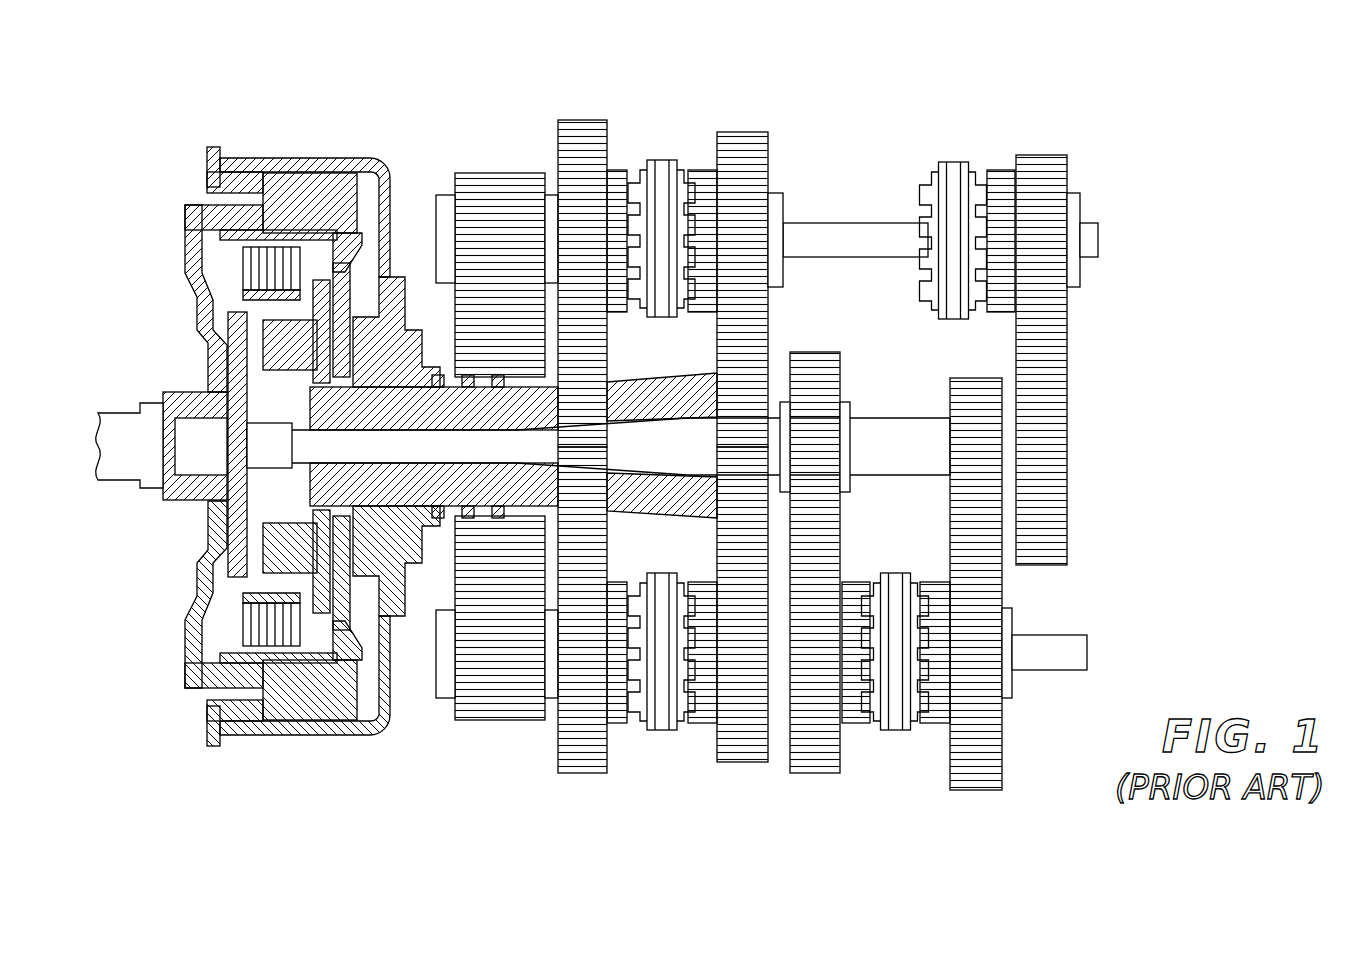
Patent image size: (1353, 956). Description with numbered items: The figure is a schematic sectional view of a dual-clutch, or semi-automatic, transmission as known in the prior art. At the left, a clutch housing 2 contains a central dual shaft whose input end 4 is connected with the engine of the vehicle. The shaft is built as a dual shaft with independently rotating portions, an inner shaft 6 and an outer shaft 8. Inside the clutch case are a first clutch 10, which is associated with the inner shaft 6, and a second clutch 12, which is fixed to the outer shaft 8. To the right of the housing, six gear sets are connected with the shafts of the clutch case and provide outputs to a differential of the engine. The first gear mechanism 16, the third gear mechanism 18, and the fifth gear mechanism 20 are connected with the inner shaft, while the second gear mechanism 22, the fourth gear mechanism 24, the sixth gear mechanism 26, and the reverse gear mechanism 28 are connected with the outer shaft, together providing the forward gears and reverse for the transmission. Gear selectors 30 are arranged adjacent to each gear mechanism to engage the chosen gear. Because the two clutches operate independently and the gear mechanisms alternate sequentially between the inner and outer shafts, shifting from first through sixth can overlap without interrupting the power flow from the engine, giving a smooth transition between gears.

The clutch housing 2 is at (343, 160).
The input end 4 is at (125, 413).
The inner shaft 6 is at (190, 462).
The outer shaft 8 is at (432, 480).
The first clutch 10 is at (265, 180).
The second clutch 12 is at (285, 262).
The first gear mechanism 16 is at (983, 760).
The third gear mechanism 18 is at (800, 773).
The fifth gear mechanism 20 is at (1043, 155).
The second gear mechanism 22 is at (591, 773).
The fourth gear mechanism 24 is at (740, 762).
The sixth gear mechanism 26 is at (750, 132).
The reverse gear mechanism 28 is at (583, 120).
The gear selectors 30 is at (660, 160).